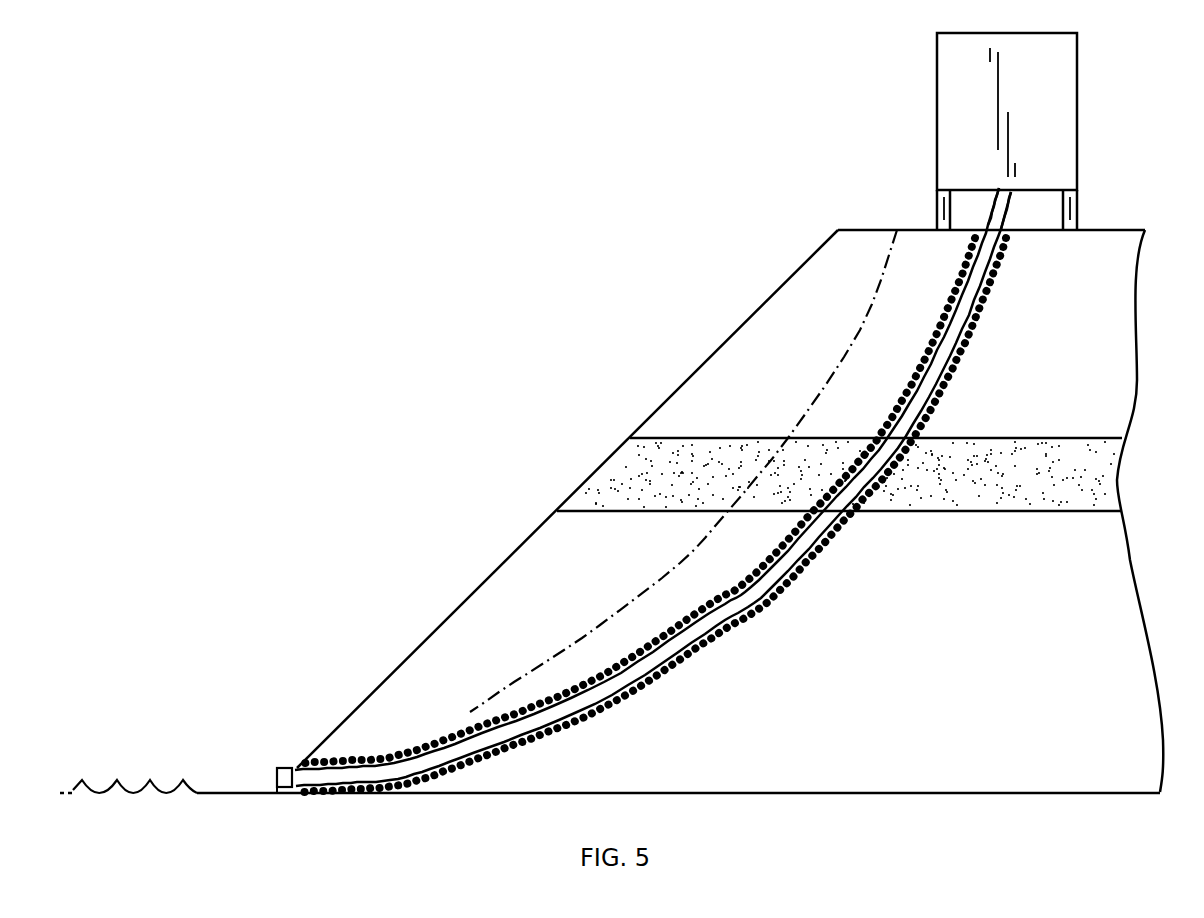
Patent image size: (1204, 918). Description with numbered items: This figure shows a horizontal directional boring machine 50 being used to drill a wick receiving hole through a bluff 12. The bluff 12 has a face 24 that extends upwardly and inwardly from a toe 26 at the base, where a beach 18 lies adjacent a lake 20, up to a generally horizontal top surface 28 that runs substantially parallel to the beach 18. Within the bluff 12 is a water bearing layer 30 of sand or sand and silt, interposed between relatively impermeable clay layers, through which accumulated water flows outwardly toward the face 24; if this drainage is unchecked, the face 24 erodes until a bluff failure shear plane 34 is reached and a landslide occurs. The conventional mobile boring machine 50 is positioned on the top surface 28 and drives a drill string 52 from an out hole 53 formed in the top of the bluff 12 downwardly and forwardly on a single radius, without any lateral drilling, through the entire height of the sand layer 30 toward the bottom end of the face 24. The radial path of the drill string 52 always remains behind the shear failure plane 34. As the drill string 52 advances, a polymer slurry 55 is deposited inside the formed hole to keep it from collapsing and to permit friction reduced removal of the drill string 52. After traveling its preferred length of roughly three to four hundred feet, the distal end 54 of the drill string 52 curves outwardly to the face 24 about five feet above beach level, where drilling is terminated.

The bluff 12 is at (745, 243).
The beach 18 is at (238, 797).
The lake 20 is at (132, 797).
The face 24 is at (688, 380).
The toe 26 is at (277, 789).
The top surface 28 is at (1113, 230).
The water bearing layer 30 is at (1010, 513).
The bluff failure shear plane 34 is at (650, 592).
The horizontal directional boring machine 50 is at (1062, 115).
The drill string 52 is at (799, 554).
The out hole 53 is at (1005, 213).
The distal end 54 is at (288, 768).
The polymer slurry 55 is at (934, 391).